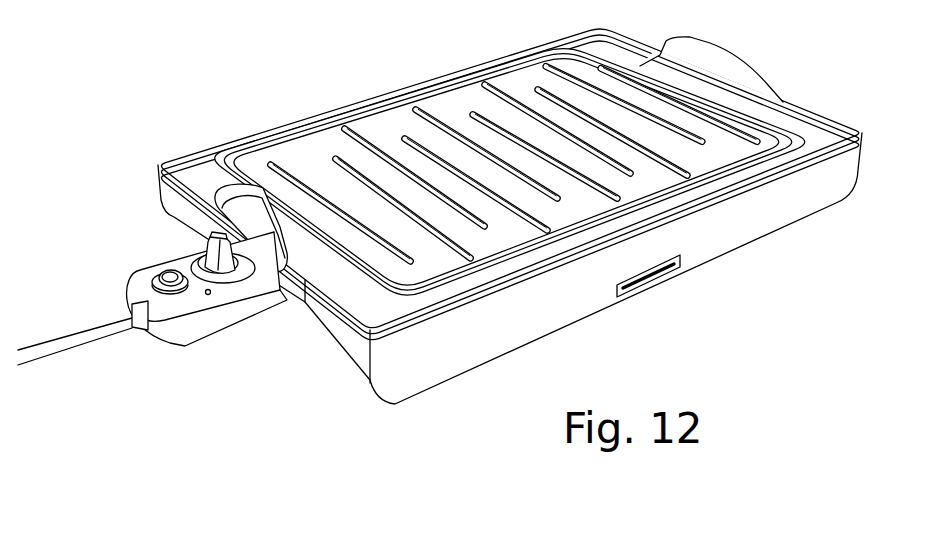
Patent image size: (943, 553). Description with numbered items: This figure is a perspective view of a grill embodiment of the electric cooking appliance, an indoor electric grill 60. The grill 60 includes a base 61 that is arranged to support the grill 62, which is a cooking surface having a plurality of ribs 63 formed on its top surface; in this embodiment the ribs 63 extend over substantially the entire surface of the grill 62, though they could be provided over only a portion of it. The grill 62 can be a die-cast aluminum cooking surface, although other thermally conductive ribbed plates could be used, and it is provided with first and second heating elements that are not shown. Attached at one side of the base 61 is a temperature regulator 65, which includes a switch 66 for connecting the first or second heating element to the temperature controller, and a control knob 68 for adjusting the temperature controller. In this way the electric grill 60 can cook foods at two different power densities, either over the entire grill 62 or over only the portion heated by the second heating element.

The indoor electric grill 60 is at (497, 249).
The base 61 is at (437, 347).
The grill 62 is at (481, 149).
The ribs 63 is at (427, 115).
The temperature regulator 65 is at (152, 307).
The switch 66 is at (163, 278).
The control knob 68 is at (210, 260).